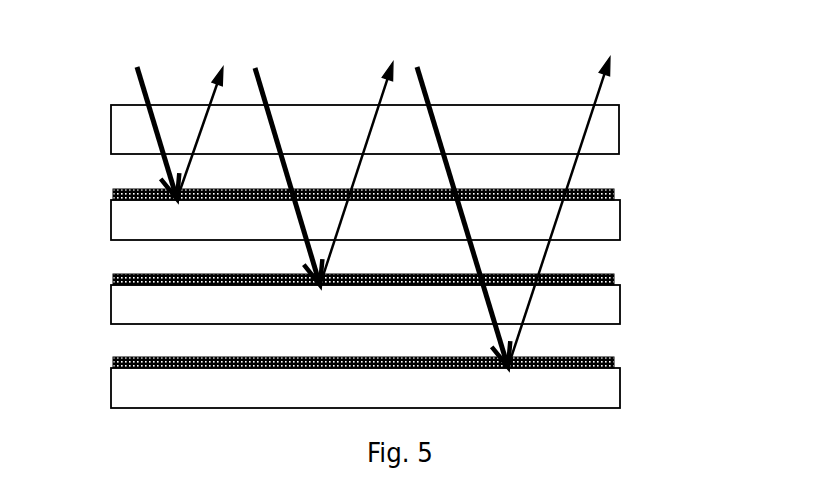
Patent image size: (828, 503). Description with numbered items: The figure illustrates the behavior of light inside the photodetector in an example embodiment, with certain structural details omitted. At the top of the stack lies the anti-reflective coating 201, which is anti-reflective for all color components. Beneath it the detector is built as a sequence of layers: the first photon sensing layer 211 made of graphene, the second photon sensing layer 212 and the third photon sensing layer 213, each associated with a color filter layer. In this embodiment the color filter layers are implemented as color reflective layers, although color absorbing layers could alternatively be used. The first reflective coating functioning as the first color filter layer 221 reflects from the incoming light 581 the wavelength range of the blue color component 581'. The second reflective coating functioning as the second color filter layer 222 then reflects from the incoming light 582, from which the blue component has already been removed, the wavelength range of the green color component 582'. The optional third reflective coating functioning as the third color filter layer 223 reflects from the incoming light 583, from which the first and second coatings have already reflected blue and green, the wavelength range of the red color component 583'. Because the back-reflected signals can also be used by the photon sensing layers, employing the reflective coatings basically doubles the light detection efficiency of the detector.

The anti-reflective coating 201 is at (111, 123).
The first photon sensing layer 211 is at (614, 193).
The second photon sensing layer 212 is at (614, 278).
The third photon sensing layer 213 is at (614, 362).
The first color filter layer 221 is at (111, 218).
The second color filter layer 222 is at (111, 300).
The third color filter layer 223 is at (111, 388).
The incoming light 581 is at (123, 120).
The blue color component 581' is at (200, 112).
The incoming light 582 is at (283, 146).
The green color component 582' is at (357, 154).
The incoming light 583 is at (463, 193).
The red color component 583' is at (569, 193).